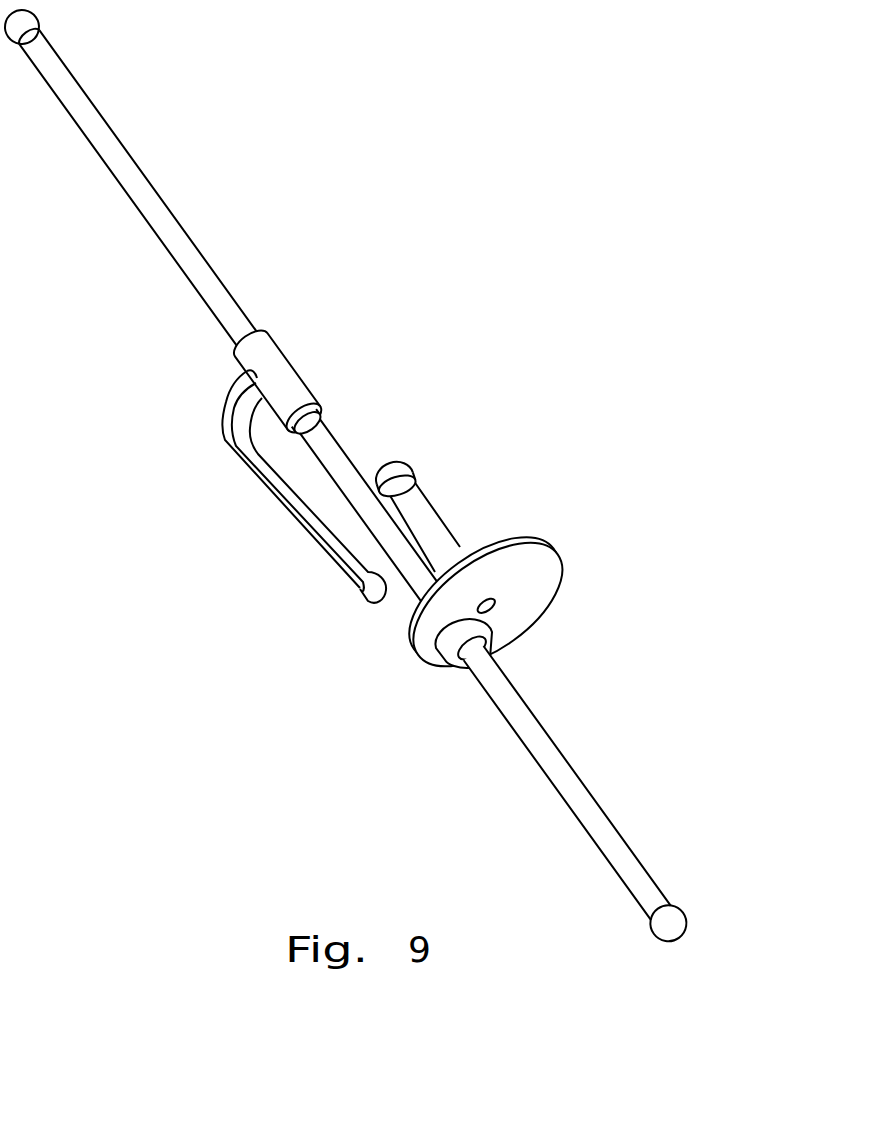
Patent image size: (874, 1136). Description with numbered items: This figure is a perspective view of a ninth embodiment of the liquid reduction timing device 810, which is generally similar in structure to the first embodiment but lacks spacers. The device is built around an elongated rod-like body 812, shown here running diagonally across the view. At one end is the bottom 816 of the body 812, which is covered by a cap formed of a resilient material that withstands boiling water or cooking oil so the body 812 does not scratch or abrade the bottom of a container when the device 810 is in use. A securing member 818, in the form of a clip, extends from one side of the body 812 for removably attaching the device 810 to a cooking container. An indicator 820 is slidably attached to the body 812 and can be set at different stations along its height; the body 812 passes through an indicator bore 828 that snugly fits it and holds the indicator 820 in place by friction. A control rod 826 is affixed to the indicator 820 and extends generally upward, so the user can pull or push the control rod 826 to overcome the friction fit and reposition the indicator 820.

The liquid reduction timing device 810 is at (313, 303).
The body 812 is at (146, 214).
The bottom 816 is at (668, 916).
The securing member 818 is at (226, 444).
The indicator 820 is at (548, 578).
The control rod 826 is at (420, 491).
The indicator bore 828 is at (493, 666).